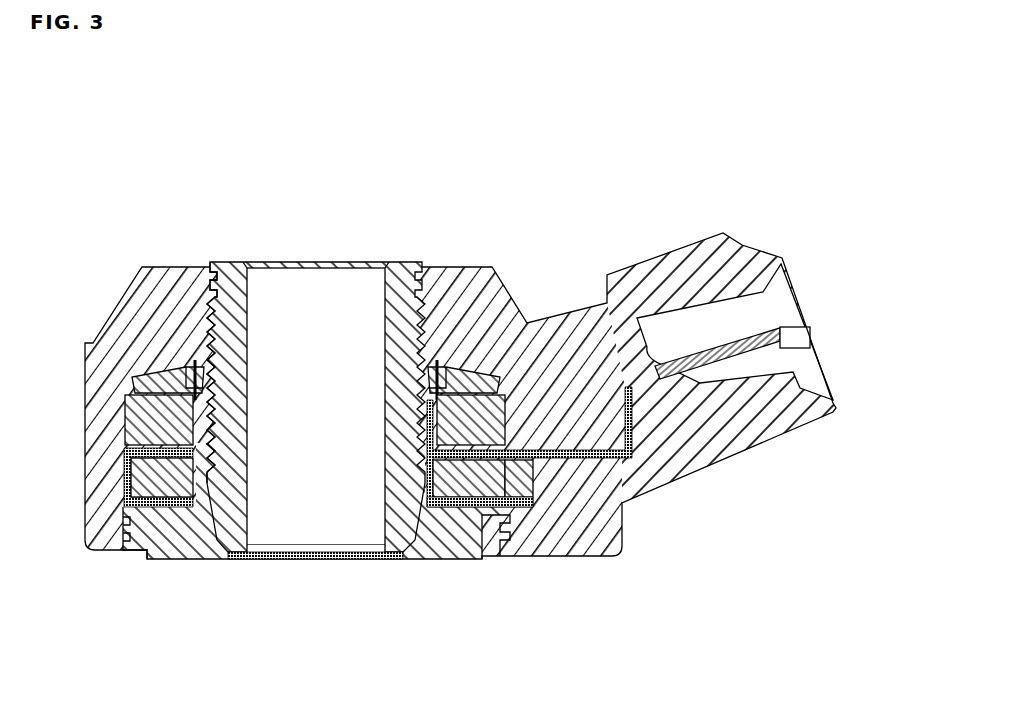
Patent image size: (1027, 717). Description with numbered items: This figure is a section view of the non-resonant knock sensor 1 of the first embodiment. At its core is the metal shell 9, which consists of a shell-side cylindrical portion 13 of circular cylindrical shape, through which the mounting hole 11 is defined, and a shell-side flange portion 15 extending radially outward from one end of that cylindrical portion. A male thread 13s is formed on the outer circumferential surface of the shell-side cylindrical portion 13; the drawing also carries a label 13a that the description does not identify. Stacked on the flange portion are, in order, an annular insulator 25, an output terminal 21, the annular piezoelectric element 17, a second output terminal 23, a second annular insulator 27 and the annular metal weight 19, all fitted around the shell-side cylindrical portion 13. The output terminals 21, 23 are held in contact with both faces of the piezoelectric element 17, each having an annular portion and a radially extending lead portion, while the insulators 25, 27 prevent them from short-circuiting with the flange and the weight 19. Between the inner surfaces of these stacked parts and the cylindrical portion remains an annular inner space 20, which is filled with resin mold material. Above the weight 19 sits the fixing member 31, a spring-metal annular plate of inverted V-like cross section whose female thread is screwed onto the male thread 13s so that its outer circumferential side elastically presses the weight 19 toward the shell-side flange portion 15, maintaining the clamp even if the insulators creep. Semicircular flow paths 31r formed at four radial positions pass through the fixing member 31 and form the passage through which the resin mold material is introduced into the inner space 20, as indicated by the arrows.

The non-resonant knock sensor 1 is at (392, 178).
The metal shell 9 is at (363, 624).
The mounting hole 11 is at (312, 290).
The shell-side cylindrical portion 13 is at (390, 488).
The inner peripheral surface of stem 13a is at (248, 463).
The male thread 13s is at (197, 340).
The shell-side flange portion 15 is at (450, 540).
The piezoelectric element 17 is at (500, 478).
The weight 19 is at (622, 505).
The annular inner space 20 is at (218, 497).
The output terminal 21 is at (513, 462).
The output terminal 23 is at (508, 430).
The annular insulator 25 is at (478, 520).
The annular insulator 27 is at (607, 462).
The fixing member 31 is at (478, 368).
The flow paths 31r is at (443, 370).